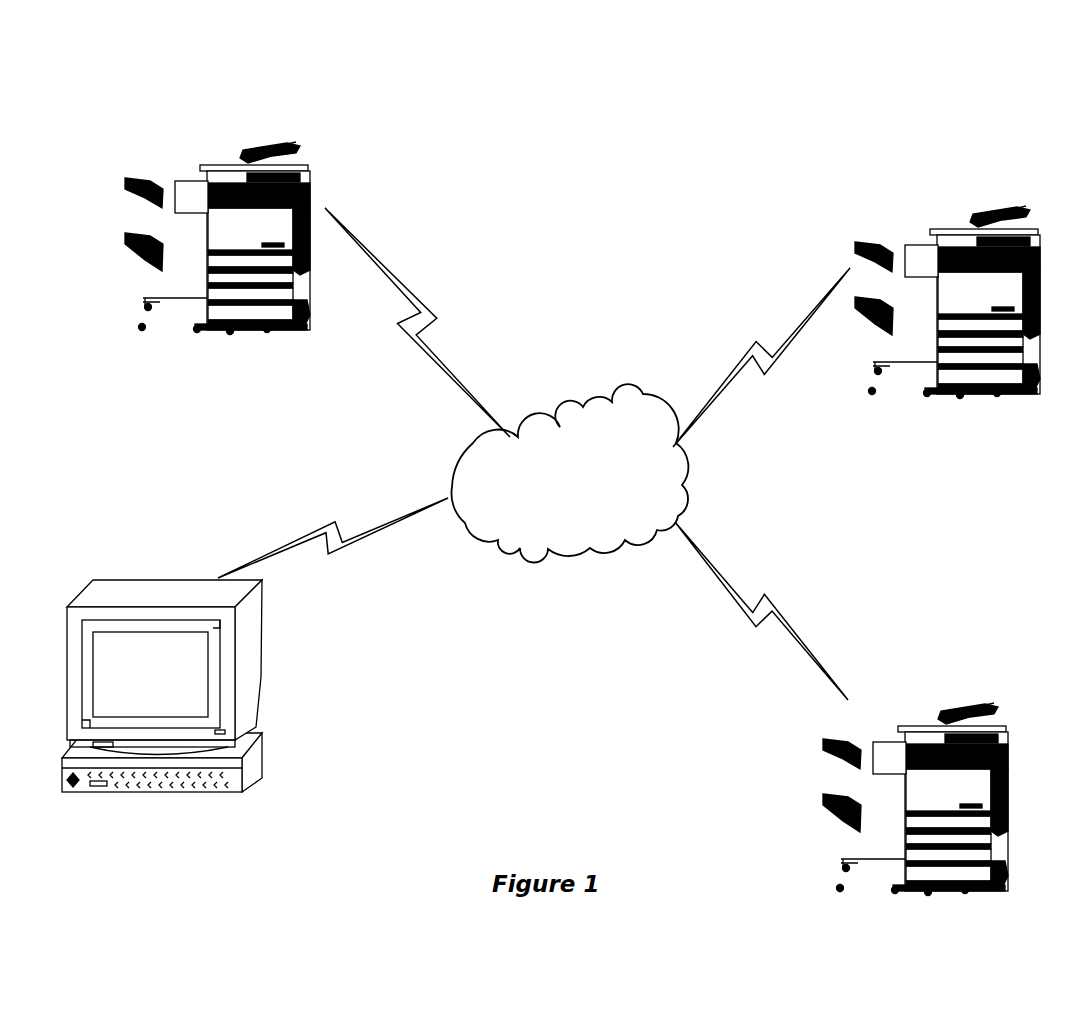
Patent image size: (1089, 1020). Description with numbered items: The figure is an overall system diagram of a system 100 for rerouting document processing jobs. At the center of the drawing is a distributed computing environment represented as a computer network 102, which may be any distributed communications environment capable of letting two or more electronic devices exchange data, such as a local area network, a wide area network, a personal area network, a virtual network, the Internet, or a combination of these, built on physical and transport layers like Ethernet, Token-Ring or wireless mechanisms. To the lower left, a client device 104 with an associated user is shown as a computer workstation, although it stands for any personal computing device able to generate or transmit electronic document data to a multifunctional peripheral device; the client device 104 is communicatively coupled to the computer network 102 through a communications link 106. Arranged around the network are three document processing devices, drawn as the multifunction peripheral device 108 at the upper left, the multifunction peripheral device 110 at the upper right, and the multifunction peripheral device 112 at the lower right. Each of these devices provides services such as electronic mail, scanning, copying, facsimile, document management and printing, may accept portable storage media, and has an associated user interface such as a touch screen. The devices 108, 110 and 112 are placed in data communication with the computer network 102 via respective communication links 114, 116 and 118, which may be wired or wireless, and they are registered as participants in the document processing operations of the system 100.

The system 100 is at (718, 92).
The computer network 102 is at (630, 382).
The client device 104 is at (108, 580).
The communications link 106 is at (307, 532).
The multifunction peripheral device 108 is at (182, 167).
The multifunction peripheral device 110 is at (1003, 213).
The multifunction peripheral device 112 is at (997, 728).
The communication link 114 is at (437, 318).
The communication link 116 is at (763, 378).
The communication link 118 is at (797, 620).